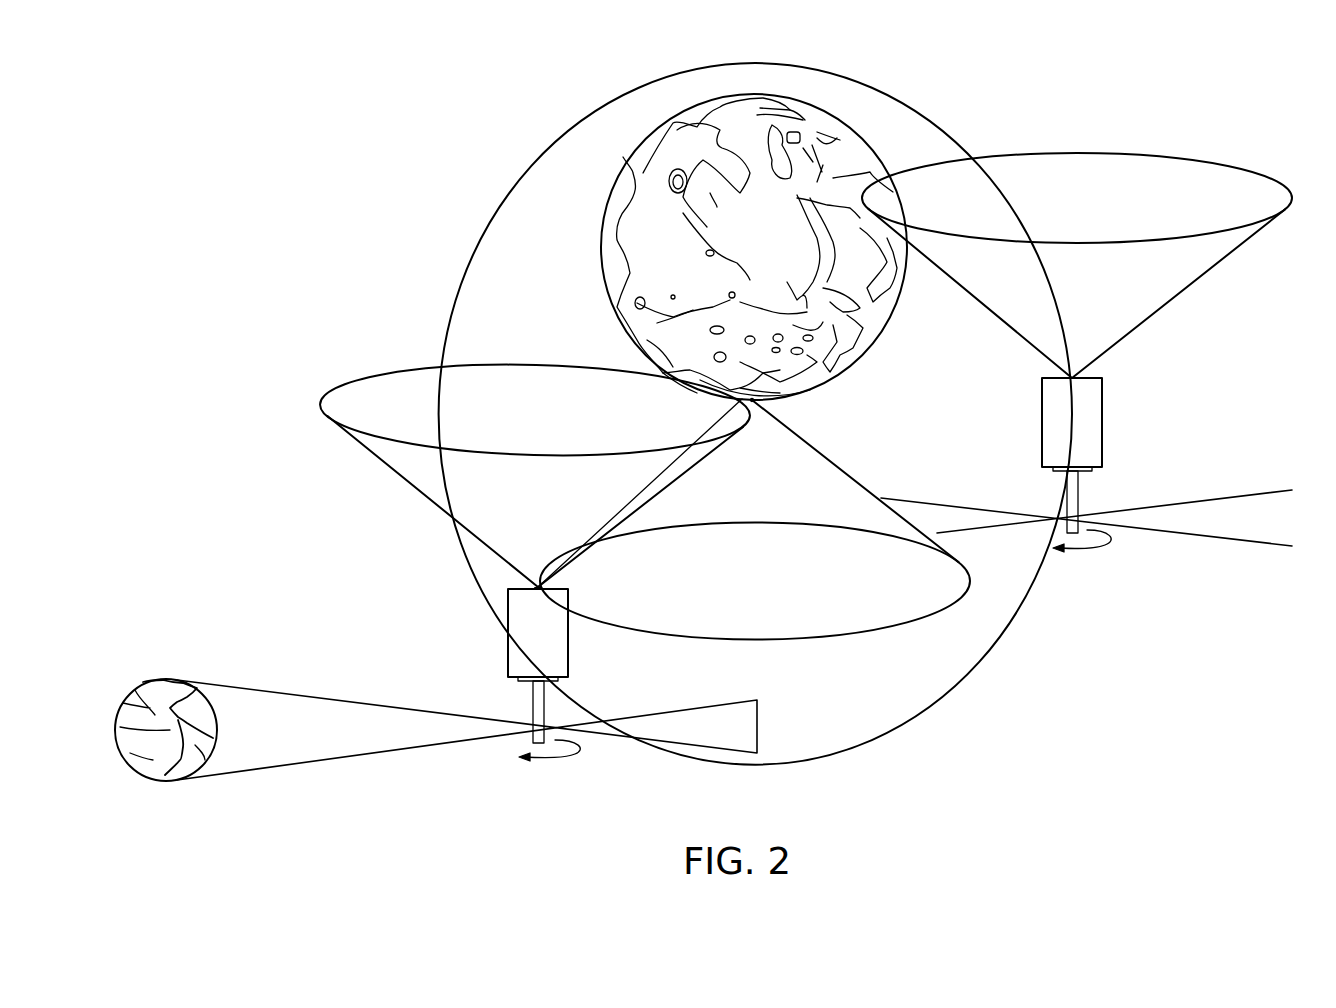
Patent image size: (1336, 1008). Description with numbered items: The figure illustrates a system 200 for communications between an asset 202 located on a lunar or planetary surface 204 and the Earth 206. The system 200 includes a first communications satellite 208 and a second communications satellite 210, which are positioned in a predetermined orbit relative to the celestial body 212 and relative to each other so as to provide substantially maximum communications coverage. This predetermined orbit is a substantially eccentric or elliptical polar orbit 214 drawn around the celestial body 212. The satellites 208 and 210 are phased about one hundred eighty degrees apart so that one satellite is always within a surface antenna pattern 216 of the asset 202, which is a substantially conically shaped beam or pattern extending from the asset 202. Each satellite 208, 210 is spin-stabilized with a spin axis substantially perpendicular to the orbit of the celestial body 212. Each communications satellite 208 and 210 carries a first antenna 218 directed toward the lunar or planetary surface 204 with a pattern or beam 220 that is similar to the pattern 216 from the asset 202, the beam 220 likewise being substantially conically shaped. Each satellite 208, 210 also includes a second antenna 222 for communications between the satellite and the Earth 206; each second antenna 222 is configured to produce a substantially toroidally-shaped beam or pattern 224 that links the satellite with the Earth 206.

The system 200 is at (1032, 715).
The asset 202 is at (752, 402).
The lunar or planetary surface 204 is at (806, 401).
The Earth 206 is at (153, 678).
The first communications satellite 208 is at (570, 658).
The second communications satellite 210 is at (1103, 427).
The celestial body 212 is at (805, 98).
The elliptical polar orbit 214 is at (542, 155).
The surface antenna pattern 216 is at (820, 637).
The first antenna 218 is at (528, 588).
The pattern or beam 220 is at (364, 450).
The second antenna 222 is at (1078, 497).
The toroidally-shaped beam or pattern 224 is at (283, 765).